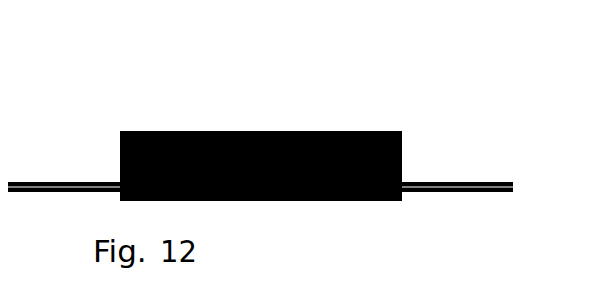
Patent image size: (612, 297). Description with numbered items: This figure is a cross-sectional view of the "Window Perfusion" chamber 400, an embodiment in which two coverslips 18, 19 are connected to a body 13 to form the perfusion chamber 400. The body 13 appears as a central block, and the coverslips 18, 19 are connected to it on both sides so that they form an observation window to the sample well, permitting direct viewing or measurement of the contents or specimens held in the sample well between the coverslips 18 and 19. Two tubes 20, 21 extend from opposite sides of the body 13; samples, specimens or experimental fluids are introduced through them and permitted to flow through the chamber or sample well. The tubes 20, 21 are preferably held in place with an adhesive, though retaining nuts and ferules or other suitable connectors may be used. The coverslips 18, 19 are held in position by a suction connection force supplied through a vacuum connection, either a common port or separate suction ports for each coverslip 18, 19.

The perfusion chamber 400 is at (230, 85).
The body 13 is at (403, 158).
The coverslip 19 is at (278, 131).
The coverslip 18 is at (303, 198).
The tube 20 is at (27, 182).
The tube 21 is at (475, 180).